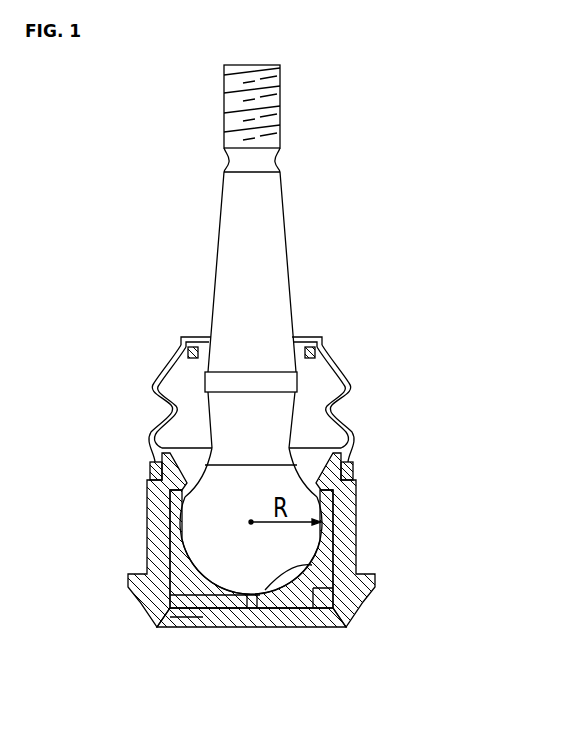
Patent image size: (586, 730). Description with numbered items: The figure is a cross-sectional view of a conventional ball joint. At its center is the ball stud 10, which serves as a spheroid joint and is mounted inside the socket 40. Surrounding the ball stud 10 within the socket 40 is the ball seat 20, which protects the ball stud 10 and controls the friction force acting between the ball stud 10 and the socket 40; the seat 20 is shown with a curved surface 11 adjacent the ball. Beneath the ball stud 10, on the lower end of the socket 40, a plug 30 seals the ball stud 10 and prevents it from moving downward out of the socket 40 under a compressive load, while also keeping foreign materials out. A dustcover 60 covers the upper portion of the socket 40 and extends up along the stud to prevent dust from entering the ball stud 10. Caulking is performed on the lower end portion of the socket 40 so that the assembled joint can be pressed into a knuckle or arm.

The ball stud 10 is at (226, 578).
The curved surface 11 is at (312, 565).
The ball seat 20 is at (320, 585).
The plug 30 is at (178, 627).
The socket 40 is at (158, 502).
The dustcover 60 is at (323, 357).